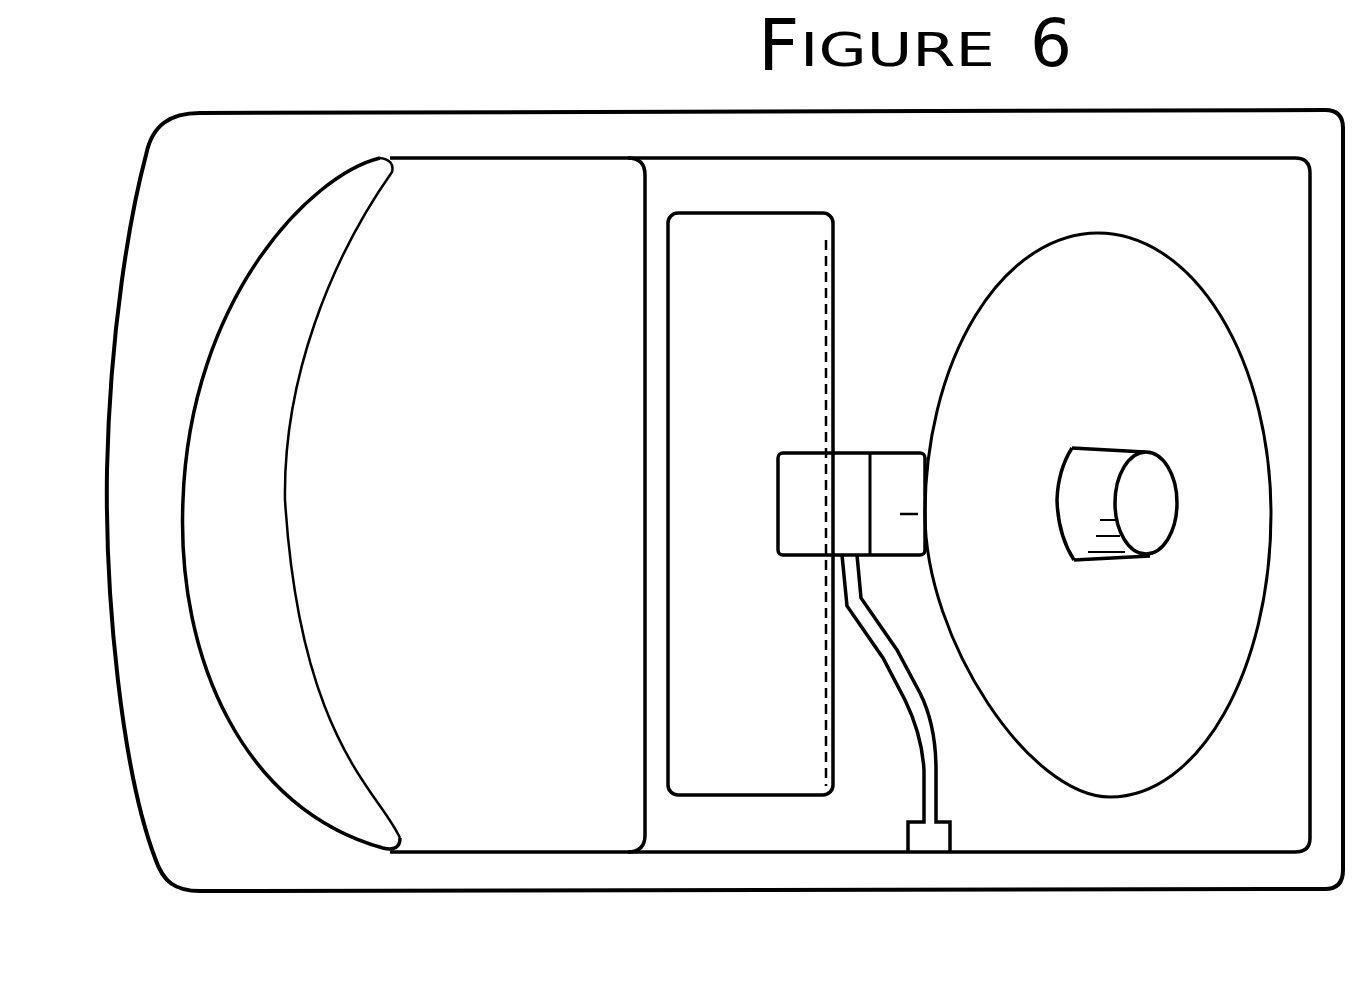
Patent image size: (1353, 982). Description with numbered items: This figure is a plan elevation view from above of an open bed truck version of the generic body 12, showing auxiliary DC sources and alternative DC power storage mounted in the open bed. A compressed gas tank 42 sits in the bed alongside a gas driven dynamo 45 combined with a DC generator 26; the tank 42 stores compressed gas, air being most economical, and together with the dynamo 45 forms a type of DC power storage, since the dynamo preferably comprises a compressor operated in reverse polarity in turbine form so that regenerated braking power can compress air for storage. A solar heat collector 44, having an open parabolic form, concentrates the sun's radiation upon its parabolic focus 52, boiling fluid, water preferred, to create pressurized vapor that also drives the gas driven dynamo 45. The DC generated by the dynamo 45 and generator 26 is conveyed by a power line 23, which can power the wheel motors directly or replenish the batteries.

The generic body 12 is at (172, 153).
The compressed gas tank 42 is at (752, 327).
The solar heat collector 44 is at (1010, 265).
The gas driven dynamo 45 is at (900, 452).
The DC generator 26 is at (800, 506).
The power line 23 is at (938, 790).
The parabolic focus 52 is at (1150, 507).